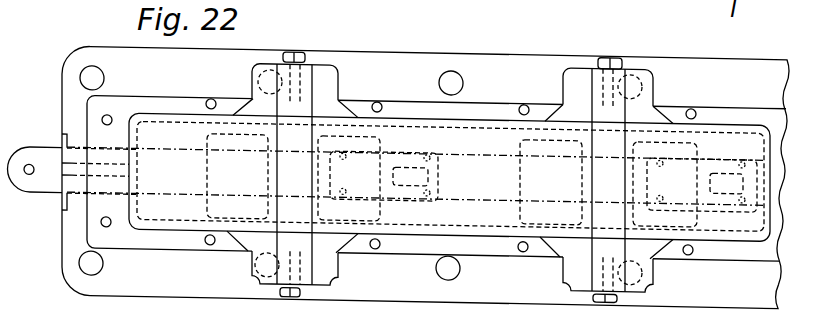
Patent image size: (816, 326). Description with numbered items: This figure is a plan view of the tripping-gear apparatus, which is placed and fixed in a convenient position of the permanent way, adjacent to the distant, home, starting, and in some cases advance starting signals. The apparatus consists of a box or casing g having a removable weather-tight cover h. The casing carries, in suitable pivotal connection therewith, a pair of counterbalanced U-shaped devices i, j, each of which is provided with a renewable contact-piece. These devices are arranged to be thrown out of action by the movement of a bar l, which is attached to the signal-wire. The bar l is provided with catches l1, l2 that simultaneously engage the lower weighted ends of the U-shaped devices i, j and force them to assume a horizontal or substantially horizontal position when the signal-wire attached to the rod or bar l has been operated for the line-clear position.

The box or casing g is at (62, 234).
The removable weather-tight cover h is at (183, 244).
The counterbalanced U-shaped device i is at (295, 174).
The counterbalanced U-shaped device j is at (608, 180).
The bar l is at (25, 150).
The catch l1 is at (438, 169).
The catch l2 is at (730, 180).